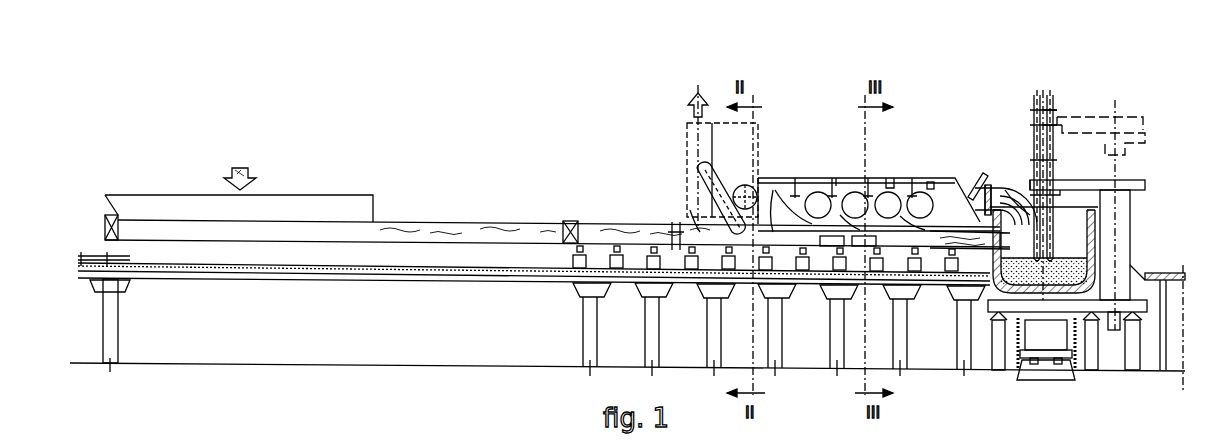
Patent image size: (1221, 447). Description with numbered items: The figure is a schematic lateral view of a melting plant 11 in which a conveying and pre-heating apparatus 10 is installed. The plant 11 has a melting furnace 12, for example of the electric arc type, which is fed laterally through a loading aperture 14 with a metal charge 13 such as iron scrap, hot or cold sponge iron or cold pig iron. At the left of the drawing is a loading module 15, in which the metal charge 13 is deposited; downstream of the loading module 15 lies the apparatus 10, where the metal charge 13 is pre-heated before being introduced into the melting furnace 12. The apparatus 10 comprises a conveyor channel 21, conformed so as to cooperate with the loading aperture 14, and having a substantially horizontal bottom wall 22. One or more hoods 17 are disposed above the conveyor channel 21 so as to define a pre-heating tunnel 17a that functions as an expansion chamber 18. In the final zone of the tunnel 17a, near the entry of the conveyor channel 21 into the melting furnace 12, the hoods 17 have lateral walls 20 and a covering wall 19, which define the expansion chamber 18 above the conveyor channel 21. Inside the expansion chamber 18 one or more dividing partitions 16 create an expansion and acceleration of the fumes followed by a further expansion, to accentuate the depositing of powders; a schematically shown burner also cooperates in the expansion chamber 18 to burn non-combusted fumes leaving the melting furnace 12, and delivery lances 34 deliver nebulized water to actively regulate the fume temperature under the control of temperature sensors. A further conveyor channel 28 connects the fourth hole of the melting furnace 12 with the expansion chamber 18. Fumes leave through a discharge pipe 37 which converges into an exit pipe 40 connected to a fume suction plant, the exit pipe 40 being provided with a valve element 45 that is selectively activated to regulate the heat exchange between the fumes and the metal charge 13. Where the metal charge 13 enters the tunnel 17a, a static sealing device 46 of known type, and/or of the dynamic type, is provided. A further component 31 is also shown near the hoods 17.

The conveying and pre-heating apparatus 10 is at (947, 105).
The melting plant 11 is at (425, 125).
The melting furnace 12 is at (1098, 238).
The metal charge 13 is at (590, 232).
The loading aperture 14 is at (985, 252).
The loading module 15 is at (338, 187).
The dividing partitions 16 is at (808, 232).
The hoods 17 is at (773, 190).
The pre-heating tunnel 17a is at (697, 222).
The expansion chamber 18 is at (891, 178).
The covering wall 19 is at (838, 178).
The lateral walls 20 is at (966, 192).
The conveyor channel 21 is at (826, 252).
The bottom wall 22 is at (862, 250).
The conveyor channel 28 is at (1012, 194).
The fitting 31 is at (931, 182).
The delivery lances 34 is at (1012, 190).
The discharge pipe 37 is at (700, 182).
The exit pipe 40 is at (690, 140).
The valve element 45 is at (735, 185).
The static sealing device 46 is at (673, 255).